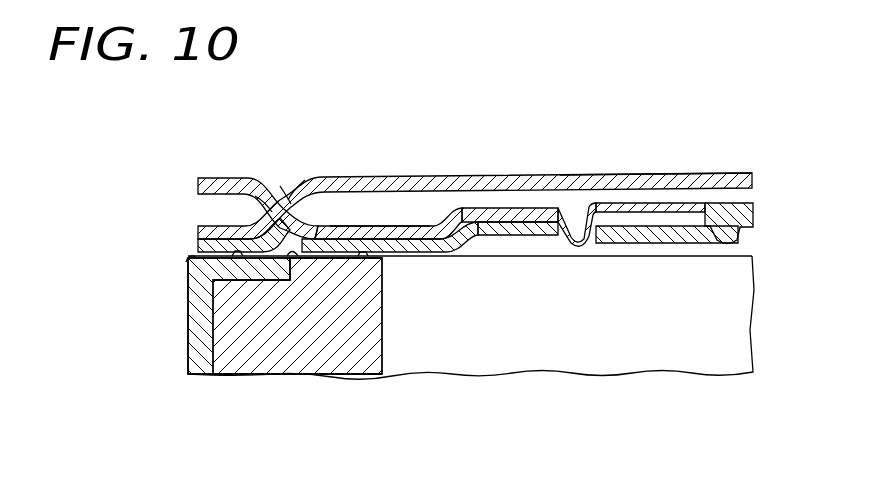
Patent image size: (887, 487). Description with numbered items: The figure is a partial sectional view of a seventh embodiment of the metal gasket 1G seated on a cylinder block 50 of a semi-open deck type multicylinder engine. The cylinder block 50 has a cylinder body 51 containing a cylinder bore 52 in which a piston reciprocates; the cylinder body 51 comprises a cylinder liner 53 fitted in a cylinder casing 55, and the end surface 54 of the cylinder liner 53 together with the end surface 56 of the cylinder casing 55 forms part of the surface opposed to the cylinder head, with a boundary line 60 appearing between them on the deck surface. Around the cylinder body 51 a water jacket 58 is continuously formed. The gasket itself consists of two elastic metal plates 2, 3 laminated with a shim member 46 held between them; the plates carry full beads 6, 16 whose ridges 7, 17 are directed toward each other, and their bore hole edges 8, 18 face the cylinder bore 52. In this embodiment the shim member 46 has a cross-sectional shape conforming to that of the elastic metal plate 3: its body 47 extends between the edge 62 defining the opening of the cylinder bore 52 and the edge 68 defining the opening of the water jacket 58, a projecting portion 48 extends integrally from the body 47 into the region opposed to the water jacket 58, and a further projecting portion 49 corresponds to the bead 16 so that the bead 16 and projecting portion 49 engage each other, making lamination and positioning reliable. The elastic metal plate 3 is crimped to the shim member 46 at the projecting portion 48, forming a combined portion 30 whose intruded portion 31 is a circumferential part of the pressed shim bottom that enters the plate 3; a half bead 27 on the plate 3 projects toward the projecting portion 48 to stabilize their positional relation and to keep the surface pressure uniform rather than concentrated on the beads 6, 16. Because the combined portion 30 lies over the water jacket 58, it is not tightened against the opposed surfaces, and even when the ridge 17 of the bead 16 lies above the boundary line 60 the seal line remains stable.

The metal gasket 1G is at (612, 148).
The elastic metal plate 2 is at (470, 174).
The elastic metal plate 3 is at (464, 257).
The bead 6 is at (262, 182).
The ridge 7 is at (287, 184).
The bore hole edge 8 is at (198, 186).
The bead 16 is at (300, 256).
The ridge 17 is at (277, 253).
The bore hole edge 18 is at (198, 243).
The half bead 27 is at (524, 226).
The combined portion 30 is at (655, 226).
The intruded portion 31 is at (585, 240).
The shim member 46 is at (410, 220).
The shim member body 47 is at (350, 228).
The projecting portion 48 is at (522, 212).
The projecting portion 49 is at (318, 182).
The cylinder block 50 is at (186, 370).
The cylinder body 51 is at (284, 378).
The cylinder bore 52 is at (104, 277).
The cylinder liner 53 is at (200, 313).
The end surface of cylinder liner 54 is at (240, 256).
The cylinder casing 55 is at (392, 350).
The end surface of cylinder casing 56 is at (362, 256).
The water jacket 58 is at (638, 356).
The boundary line 60 is at (294, 253).
The edge 62 is at (186, 262).
The edge 68 is at (395, 260).